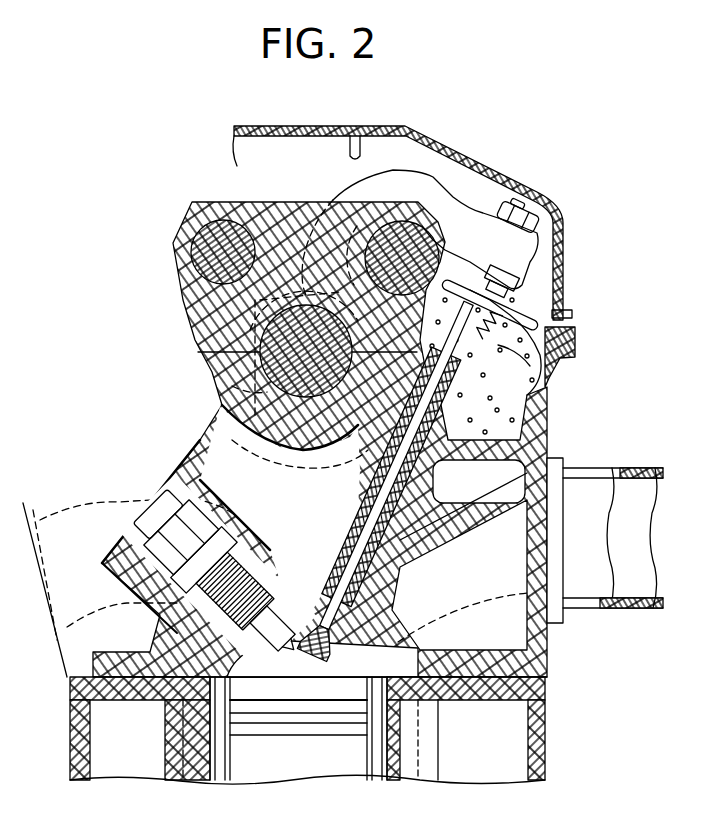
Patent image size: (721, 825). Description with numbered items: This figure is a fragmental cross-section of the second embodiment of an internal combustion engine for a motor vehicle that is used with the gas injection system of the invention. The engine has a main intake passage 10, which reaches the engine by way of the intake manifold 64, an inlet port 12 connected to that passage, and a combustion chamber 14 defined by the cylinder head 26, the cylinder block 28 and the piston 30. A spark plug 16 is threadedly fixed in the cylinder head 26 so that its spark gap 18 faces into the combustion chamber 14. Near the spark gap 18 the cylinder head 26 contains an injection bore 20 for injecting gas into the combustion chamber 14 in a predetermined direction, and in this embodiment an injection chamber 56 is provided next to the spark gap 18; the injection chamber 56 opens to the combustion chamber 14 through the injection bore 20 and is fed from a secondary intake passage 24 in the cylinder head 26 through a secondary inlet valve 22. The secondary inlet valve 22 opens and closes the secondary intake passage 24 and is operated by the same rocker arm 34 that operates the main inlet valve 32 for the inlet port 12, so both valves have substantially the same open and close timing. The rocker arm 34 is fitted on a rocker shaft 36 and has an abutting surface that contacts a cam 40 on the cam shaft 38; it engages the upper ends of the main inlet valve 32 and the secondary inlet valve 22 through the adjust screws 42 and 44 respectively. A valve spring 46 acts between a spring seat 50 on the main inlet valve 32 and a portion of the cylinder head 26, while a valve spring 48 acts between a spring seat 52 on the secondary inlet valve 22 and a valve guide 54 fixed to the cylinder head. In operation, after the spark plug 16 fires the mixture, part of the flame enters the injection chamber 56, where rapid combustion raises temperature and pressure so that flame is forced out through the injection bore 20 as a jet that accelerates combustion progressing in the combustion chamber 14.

The main intake passage 10 is at (641, 550).
The inlet port 12 is at (510, 593).
The combustion chamber 14 is at (355, 676).
The spark plug 16 is at (177, 517).
The spark gap 18 is at (276, 642).
The injection bore 20 is at (283, 668).
The secondary inlet valve 22 is at (367, 547).
The secondary intake passage 24 is at (457, 523).
The cylinder head 26 is at (540, 646).
The cylinder block 28 is at (540, 735).
The piston 30 is at (333, 707).
The main inlet valve 32 is at (485, 365).
The rocker arm 34 is at (458, 208).
The rocker shaft 36 is at (400, 236).
The cam shaft 38 is at (290, 343).
The cam 40 is at (232, 386).
The adjust screw 42 is at (527, 204).
The adjust screw 44 is at (496, 268).
The valve spring 46 is at (547, 383).
The valve spring 48 is at (517, 358).
The spring seat 50 is at (498, 302).
The spring seat 52 is at (517, 313).
The valve guide 54 is at (362, 457).
The injection chamber 56 is at (331, 655).
The intake manifold 64 is at (633, 612).